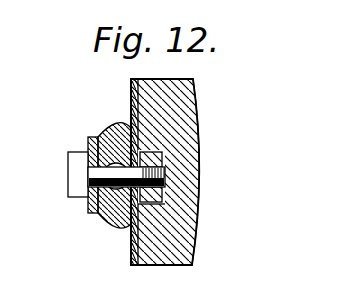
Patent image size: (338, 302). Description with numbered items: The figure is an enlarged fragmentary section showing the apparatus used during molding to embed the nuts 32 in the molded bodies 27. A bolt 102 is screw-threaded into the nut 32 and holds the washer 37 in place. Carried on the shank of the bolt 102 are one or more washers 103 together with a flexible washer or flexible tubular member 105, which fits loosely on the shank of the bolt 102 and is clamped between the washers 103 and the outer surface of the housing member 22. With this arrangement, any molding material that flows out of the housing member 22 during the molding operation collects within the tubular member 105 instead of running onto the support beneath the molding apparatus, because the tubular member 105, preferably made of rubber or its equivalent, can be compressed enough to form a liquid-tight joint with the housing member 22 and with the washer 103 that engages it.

The molded body 27 is at (196, 116).
The housing member 22 is at (131, 262).
The nut 32 is at (162, 158).
The washer 37 is at (140, 208).
The flexible tubular member 105 is at (115, 137).
The washer 103 is at (94, 214).
The bolt 102 is at (92, 175).